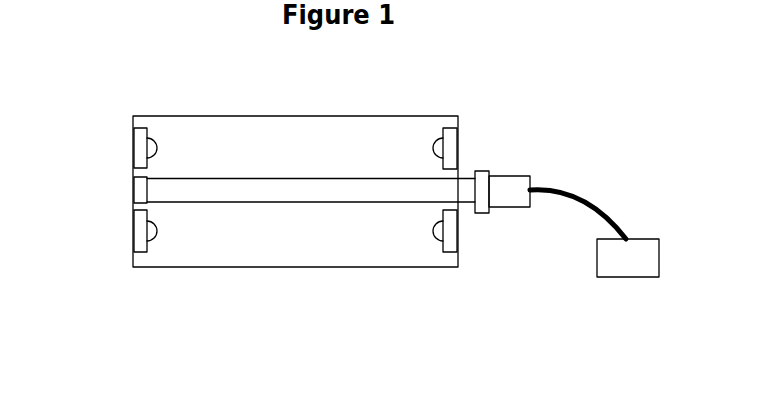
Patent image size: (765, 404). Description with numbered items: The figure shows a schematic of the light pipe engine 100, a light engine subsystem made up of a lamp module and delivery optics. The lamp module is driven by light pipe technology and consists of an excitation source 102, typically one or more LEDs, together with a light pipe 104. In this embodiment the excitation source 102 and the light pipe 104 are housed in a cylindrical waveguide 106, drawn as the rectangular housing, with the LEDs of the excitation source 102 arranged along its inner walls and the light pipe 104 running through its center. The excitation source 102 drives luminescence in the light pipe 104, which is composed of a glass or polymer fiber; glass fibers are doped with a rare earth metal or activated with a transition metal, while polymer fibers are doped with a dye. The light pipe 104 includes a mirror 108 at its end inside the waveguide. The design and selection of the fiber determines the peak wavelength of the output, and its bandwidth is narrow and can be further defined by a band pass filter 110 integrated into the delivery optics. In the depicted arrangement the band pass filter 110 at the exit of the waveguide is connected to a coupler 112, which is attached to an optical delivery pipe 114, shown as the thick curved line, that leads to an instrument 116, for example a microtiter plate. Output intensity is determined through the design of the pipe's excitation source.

The light pipe engine 100 is at (101, 131).
The excitation source 102 is at (150, 141).
The light pipe 104 is at (310, 190).
The cylindrical waveguide 106 is at (277, 267).
The mirror 108 is at (140, 192).
The band pass filter 110 is at (480, 174).
The coupler 112 is at (511, 207).
The optical delivery pipe 114 is at (595, 203).
The instrument 116 is at (609, 277).